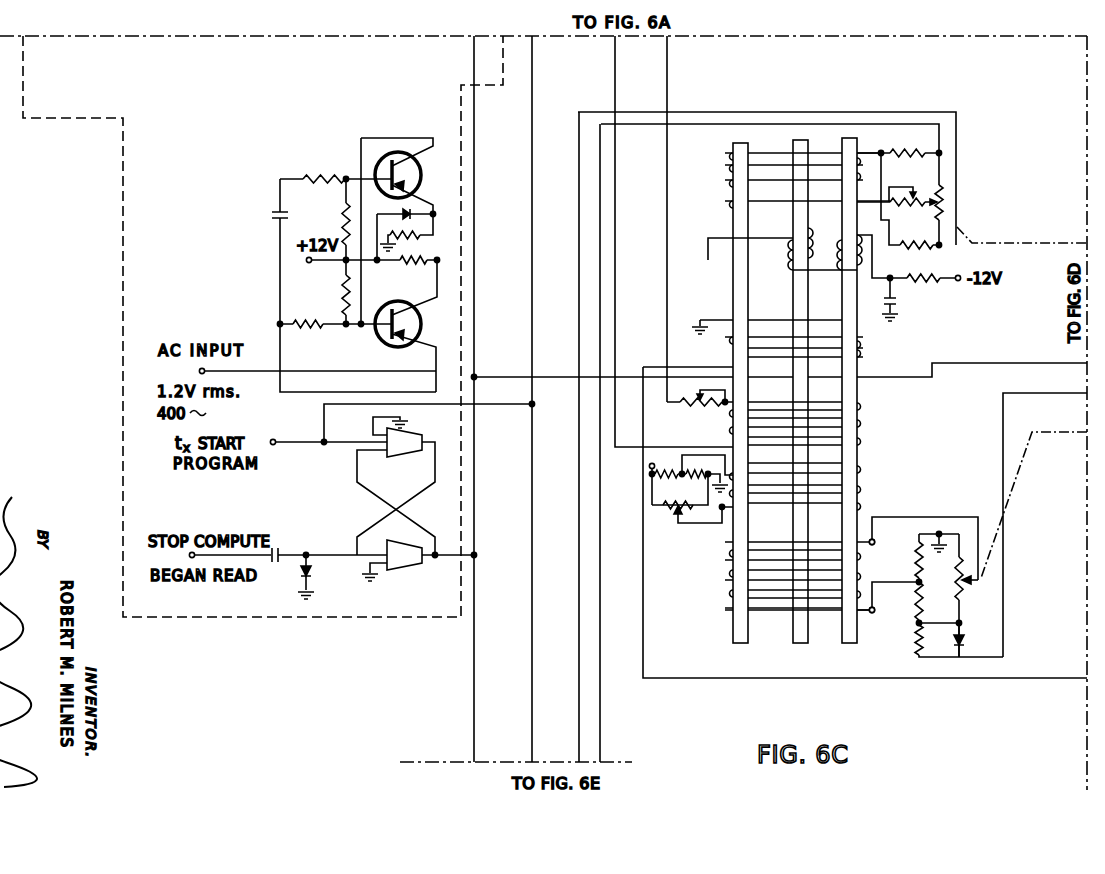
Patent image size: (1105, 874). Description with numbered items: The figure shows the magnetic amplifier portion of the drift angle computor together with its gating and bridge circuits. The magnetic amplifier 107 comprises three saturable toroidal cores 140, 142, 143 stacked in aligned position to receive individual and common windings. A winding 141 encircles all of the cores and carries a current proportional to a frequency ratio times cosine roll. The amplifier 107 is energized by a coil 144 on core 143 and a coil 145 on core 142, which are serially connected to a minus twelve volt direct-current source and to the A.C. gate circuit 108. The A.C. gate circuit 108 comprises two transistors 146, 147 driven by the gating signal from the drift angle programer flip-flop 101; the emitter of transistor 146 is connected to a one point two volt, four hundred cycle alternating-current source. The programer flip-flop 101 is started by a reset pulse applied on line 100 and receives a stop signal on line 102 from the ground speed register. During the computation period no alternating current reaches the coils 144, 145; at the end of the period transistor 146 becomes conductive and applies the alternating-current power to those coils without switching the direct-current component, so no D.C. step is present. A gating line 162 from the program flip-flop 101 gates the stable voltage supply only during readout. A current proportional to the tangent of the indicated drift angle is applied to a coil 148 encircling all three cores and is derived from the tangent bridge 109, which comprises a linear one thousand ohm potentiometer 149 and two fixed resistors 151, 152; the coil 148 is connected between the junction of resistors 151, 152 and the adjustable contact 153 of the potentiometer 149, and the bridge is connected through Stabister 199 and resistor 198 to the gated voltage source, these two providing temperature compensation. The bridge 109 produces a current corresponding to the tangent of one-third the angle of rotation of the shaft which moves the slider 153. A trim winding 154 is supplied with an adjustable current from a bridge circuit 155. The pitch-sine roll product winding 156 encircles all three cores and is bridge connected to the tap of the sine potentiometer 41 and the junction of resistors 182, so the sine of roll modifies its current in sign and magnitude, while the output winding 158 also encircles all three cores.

The transistor 147 is at (376, 167).
The transistor 146 is at (391, 342).
The A.C. gate circuit 108 is at (413, 291).
The drift angle programer flip-flop 101 is at (413, 488).
The line 100 is at (300, 444).
The line 102 is at (270, 549).
The pitch-sine roll product winding 156 is at (733, 172).
The coil 145 is at (812, 245).
The coil 144 is at (866, 252).
The resistors 182 is at (907, 149).
The sine potentiometer 41 is at (934, 203).
The magnetic amplifier 107 is at (786, 305).
The output winding 158 is at (858, 344).
The gating line 162 is at (985, 361).
The winding 141 is at (733, 431).
The trim winding 154 is at (859, 462).
The bridge circuit 155 is at (690, 499).
The fixed resistor 151 is at (914, 560).
The tangent bridge 109 is at (948, 588).
The adjustable contact 153 is at (980, 580).
The coil 148 is at (733, 593).
The fixed resistor 152 is at (911, 617).
The linear potentiometer 149 is at (962, 601).
The resistor 198 is at (916, 642).
The Stabister 199 is at (960, 639).
The saturable toroidal core 140 is at (740, 646).
The saturable toroidal core 142 is at (800, 648).
The saturable toroidal core 143 is at (847, 646).